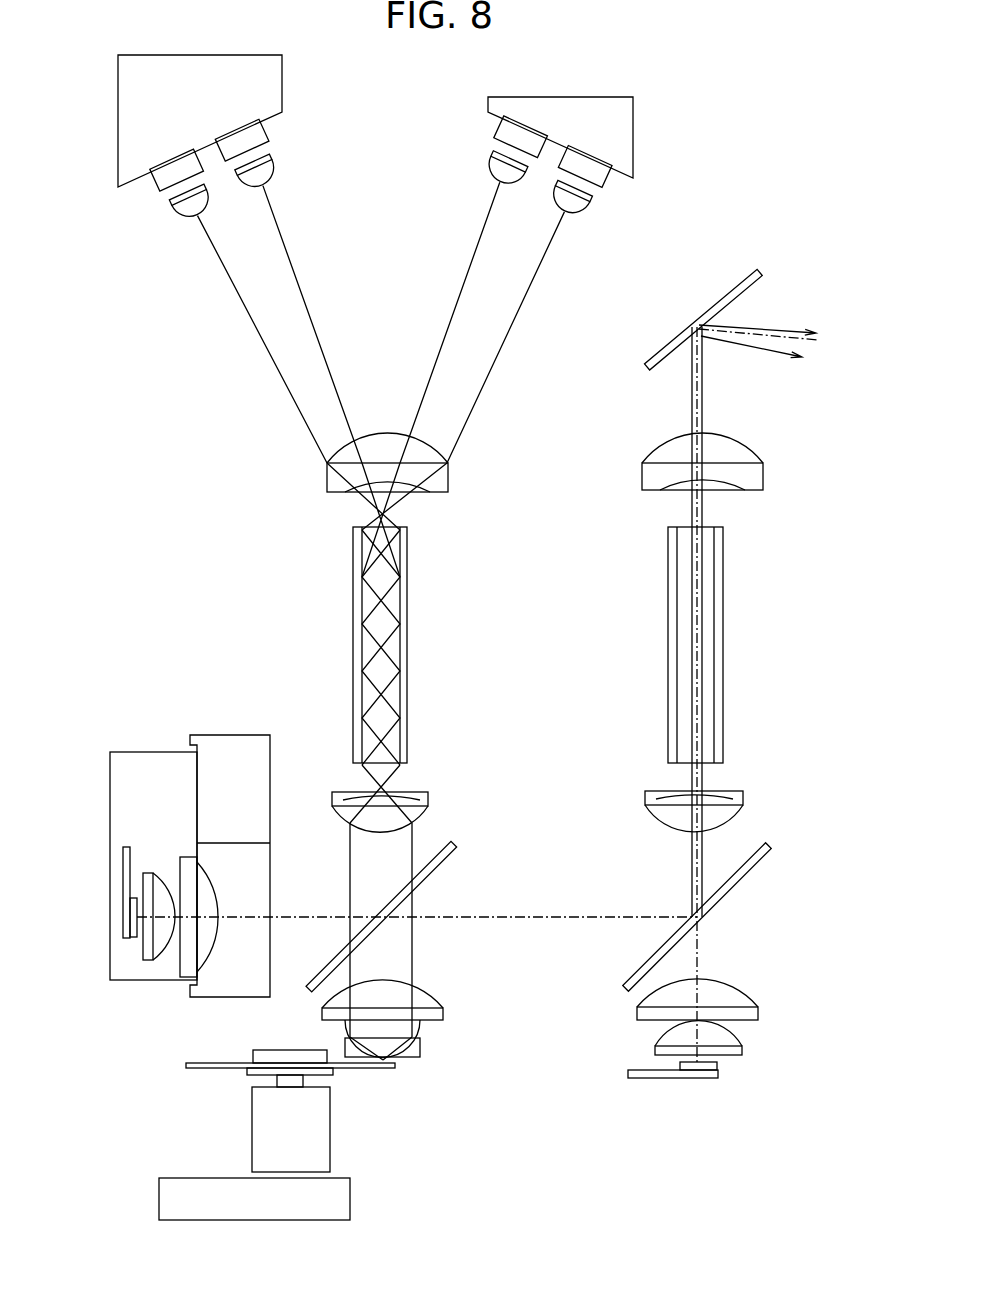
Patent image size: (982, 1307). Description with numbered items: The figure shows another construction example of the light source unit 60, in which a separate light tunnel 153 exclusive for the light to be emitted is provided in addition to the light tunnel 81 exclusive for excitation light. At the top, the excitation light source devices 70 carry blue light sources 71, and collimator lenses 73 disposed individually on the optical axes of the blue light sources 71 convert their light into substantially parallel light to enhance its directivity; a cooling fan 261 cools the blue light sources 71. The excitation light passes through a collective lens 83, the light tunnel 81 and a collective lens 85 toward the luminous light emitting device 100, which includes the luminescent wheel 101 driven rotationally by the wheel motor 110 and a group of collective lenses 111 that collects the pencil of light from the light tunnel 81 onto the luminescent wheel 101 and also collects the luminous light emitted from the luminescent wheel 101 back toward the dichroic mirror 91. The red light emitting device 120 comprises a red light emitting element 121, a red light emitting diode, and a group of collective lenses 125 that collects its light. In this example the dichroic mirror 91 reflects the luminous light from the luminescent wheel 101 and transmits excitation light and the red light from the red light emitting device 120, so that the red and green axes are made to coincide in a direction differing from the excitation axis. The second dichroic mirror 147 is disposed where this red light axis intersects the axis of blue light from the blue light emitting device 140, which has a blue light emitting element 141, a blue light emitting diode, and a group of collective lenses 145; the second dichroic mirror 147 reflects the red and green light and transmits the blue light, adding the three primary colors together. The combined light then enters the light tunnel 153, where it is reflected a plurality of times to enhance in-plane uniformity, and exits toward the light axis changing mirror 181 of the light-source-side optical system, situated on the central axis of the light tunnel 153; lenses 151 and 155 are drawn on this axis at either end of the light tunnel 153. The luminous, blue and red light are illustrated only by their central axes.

The light source unit 60 is at (682, 190).
The excitation light source device 70 is at (298, 88).
The blue light source 71 is at (257, 142).
The collimator lens 73 is at (263, 172).
The collective lens 83 is at (438, 482).
The light tunnel 81 is at (412, 652).
The collective lens 85 is at (415, 815).
The dichroic mirror 91 is at (435, 875).
The group of collective lenses 111 is at (432, 1032).
The red light emitting device 120 is at (154, 841).
The red light emitting element 121 is at (137, 918).
The group of collective lenses 125 is at (170, 867).
The luminous light emitting device 100 is at (224, 1091).
The luminescent wheel 101 is at (197, 1060).
The wheel motor 110 is at (272, 1152).
The cooling fan 261 is at (313, 1202).
The light axis changing mirror 181 is at (718, 297).
The lens 155 is at (752, 480).
The light tunnel 153 is at (727, 652).
The lens 151 is at (723, 810).
The second dichroic mirror 147 is at (728, 892).
The group of collective lenses 145 is at (748, 1035).
The blue light emitting element 141 is at (688, 1068).
The blue light emitting device 140 is at (695, 1110).